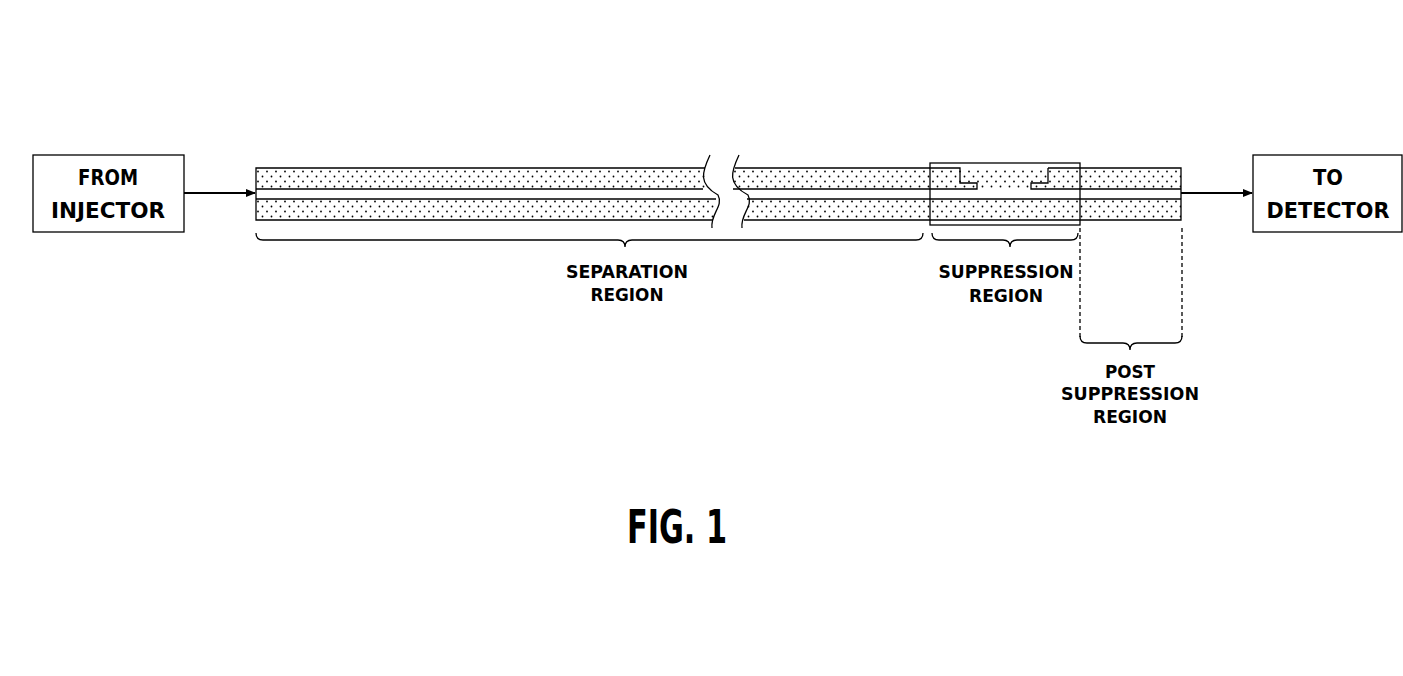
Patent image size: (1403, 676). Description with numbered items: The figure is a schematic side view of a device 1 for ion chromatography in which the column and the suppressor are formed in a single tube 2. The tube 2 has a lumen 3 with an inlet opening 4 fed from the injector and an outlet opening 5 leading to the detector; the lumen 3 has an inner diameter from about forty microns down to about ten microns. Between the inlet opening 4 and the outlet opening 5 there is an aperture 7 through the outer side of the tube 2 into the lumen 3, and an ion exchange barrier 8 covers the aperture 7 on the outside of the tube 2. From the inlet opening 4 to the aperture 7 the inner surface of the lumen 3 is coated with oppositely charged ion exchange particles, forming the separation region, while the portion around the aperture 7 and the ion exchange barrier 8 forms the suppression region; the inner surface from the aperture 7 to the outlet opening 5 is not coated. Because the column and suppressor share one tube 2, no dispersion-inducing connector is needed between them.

The device 1 is at (549, 74).
The tube 2 is at (718, 171).
The lumen 3 is at (389, 186).
The inlet opening 4 is at (249, 182).
The outlet opening 5 is at (1186, 200).
The aperture 7 is at (997, 189).
The ion exchange barrier 8 is at (942, 162).